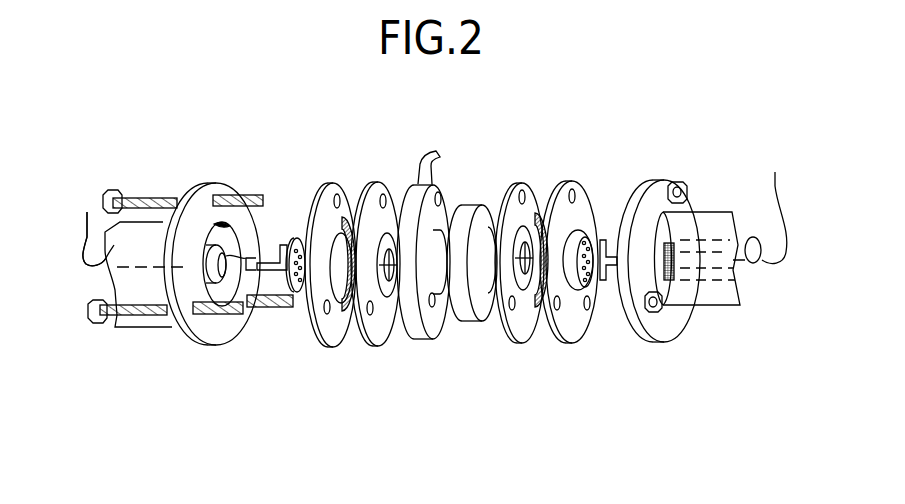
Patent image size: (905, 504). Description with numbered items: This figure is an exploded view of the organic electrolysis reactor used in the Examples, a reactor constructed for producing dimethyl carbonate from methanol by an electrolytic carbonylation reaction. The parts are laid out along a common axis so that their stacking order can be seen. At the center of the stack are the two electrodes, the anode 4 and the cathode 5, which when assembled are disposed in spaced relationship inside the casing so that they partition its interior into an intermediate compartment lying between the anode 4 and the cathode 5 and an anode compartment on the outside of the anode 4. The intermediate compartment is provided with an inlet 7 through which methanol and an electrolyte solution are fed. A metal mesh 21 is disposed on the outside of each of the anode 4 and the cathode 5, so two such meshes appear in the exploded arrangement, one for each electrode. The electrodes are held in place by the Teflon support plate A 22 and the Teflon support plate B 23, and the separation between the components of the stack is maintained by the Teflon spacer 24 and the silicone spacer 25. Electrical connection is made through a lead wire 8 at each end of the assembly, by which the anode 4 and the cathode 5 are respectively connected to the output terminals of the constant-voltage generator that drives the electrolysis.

The anode 4 is at (536, 215).
The cathode 5 is at (345, 222).
The inlet for methanol and an electrolyte solution 7 is at (423, 163).
The lead wire 8 is at (85, 233).
The metal mesh 21 is at (292, 292).
The Teflon support plate A 22 is at (565, 331).
The Teflon support plate B 23 is at (517, 313).
The Teflon spacer 24 is at (407, 215).
The silicone spacer 25 is at (463, 215).